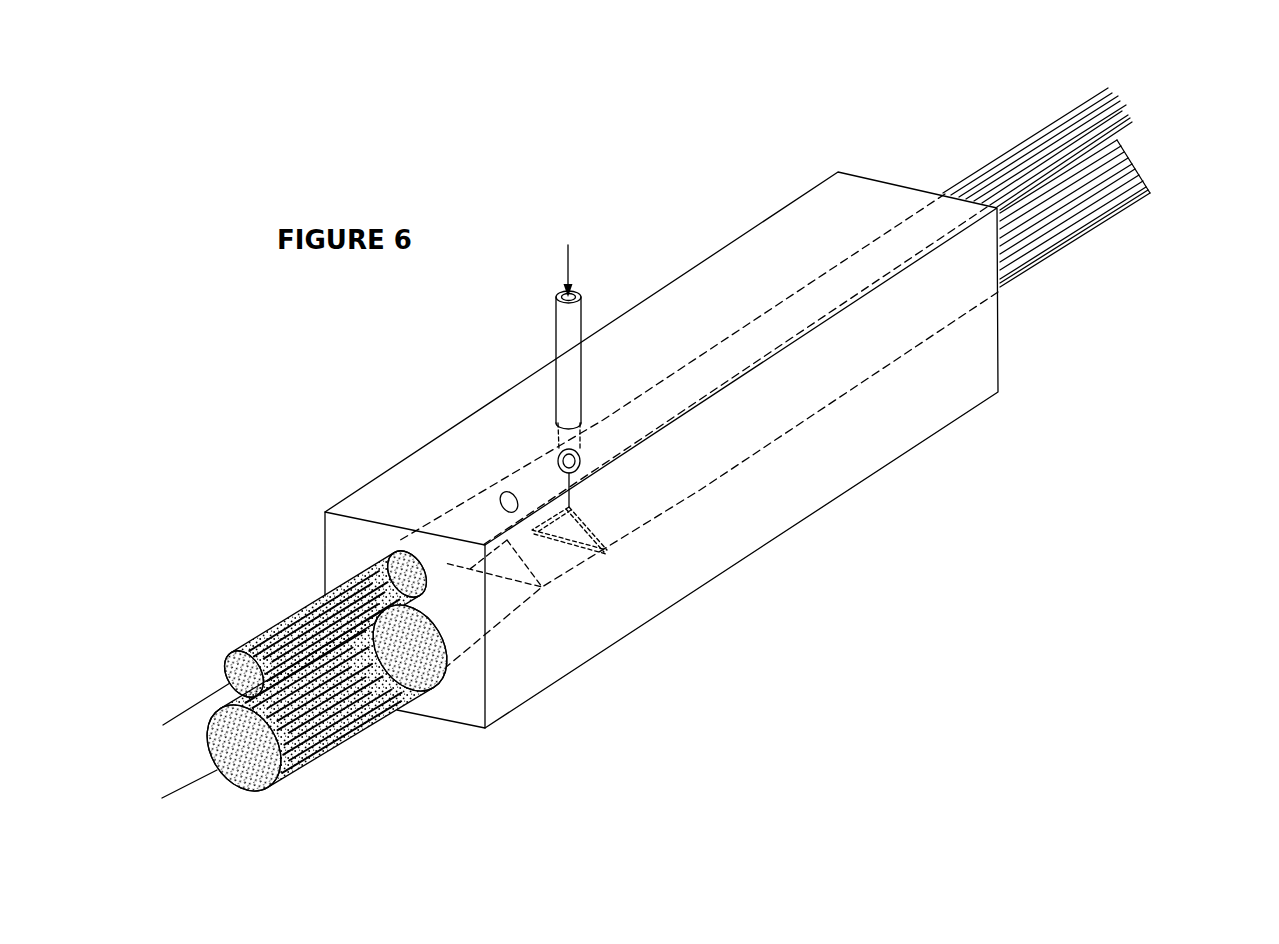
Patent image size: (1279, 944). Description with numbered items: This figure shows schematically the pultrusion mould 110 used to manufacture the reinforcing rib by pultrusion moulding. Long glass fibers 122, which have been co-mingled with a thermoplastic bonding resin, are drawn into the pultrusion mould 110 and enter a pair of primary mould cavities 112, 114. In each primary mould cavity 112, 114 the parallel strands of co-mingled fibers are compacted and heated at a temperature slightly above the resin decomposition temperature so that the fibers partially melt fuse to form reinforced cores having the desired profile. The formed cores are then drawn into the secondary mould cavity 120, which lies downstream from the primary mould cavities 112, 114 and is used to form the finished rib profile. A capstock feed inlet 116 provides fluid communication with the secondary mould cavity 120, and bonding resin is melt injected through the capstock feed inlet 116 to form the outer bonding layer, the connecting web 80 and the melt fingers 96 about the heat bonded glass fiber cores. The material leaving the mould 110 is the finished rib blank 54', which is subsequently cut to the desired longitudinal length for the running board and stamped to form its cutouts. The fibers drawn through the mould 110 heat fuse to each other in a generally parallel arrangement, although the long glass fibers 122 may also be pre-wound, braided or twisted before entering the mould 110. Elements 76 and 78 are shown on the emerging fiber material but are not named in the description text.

The pultrusion mould 110 is at (778, 514).
The capstock feed inlet 116 is at (578, 322).
The primary mould cavity 112 is at (521, 490).
The secondary mould cavity 120 is at (600, 504).
The primary mould cavity 114 is at (551, 561).
The long glass fibers 122 is at (278, 632).
The upper fiber group 76 is at (1080, 106).
The lower fiber group 78 is at (1037, 260).
The connecting web 80 is at (1107, 138).
The melt fingers 96 is at (1127, 182).
The rib blank 54' is at (1088, 250).